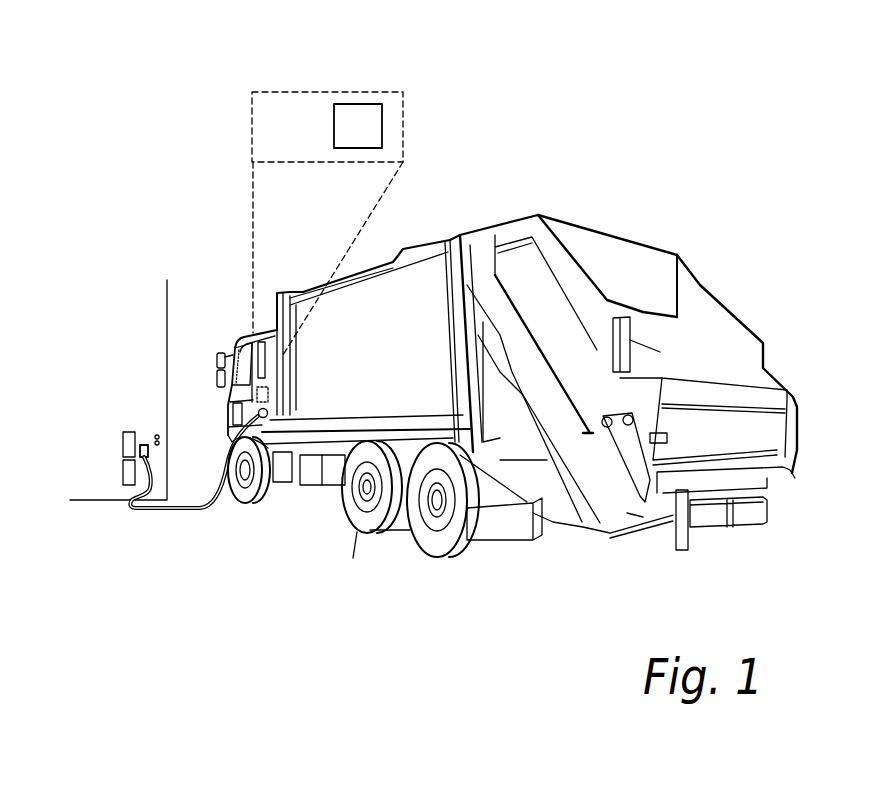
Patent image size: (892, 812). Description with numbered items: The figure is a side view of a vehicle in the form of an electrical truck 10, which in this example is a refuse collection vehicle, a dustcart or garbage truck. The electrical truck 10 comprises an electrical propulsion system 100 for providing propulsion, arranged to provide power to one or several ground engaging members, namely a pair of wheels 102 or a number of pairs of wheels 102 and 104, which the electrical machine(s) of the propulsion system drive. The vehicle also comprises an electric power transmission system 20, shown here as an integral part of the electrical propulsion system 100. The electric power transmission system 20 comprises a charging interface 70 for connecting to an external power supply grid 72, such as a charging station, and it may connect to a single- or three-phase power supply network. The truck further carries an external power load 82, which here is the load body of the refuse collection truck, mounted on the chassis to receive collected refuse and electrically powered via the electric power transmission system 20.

The electrical truck 10 is at (240, 281).
The electric power transmission system 20 is at (358, 113).
The charging interface 70 is at (237, 400).
The external power supply grid 72 is at (144, 442).
The external power load 82 is at (427, 280).
The electrical propulsion system 100 is at (295, 102).
The pair of wheels 102 is at (237, 502).
The pair of wheels 104 is at (413, 541).